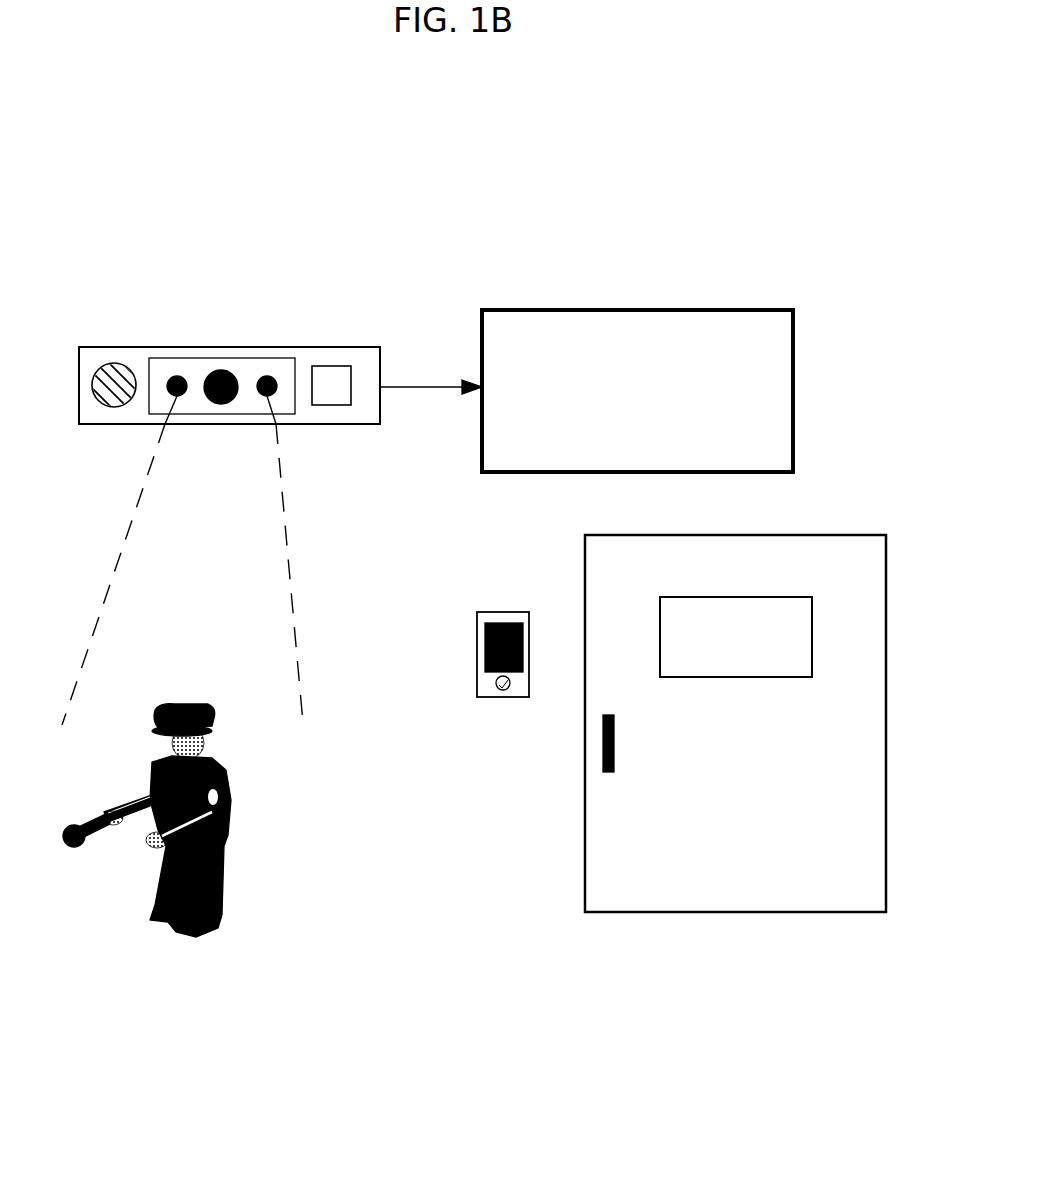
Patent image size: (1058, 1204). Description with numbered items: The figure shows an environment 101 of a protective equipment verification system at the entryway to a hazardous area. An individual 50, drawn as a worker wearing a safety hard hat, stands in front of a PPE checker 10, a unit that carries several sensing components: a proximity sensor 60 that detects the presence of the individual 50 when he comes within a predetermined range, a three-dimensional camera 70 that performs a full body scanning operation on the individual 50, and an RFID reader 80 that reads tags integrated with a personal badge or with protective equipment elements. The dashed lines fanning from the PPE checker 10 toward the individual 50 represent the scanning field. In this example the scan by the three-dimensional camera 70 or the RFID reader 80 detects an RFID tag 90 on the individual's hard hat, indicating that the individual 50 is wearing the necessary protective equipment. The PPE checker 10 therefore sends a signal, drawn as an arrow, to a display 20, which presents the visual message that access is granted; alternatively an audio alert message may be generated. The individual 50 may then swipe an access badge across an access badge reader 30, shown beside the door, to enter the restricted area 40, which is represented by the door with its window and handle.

The environment 101 is at (623, 113).
The PPE checker 10 is at (360, 425).
The display 20 is at (755, 308).
The access badge reader 30 is at (510, 697).
The restricted area 40 is at (848, 912).
The individual 50 is at (200, 933).
The proximity sensor 60 is at (110, 362).
The three-dimensional camera 70 is at (220, 369).
The RFID reader 80 is at (333, 366).
The RFID tag 90 is at (217, 725).